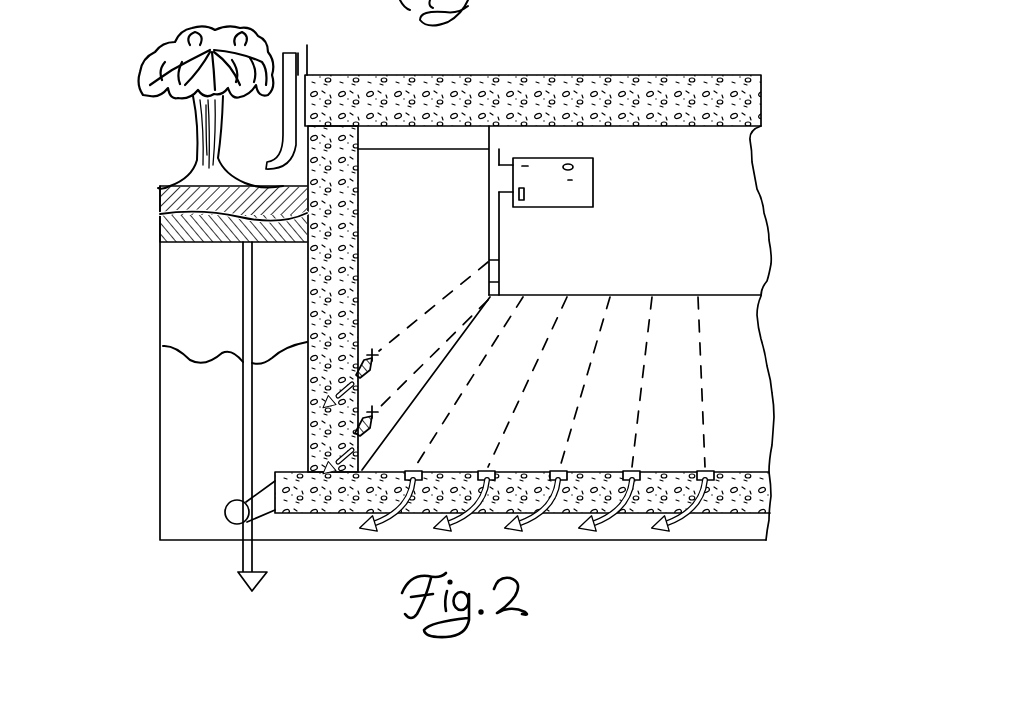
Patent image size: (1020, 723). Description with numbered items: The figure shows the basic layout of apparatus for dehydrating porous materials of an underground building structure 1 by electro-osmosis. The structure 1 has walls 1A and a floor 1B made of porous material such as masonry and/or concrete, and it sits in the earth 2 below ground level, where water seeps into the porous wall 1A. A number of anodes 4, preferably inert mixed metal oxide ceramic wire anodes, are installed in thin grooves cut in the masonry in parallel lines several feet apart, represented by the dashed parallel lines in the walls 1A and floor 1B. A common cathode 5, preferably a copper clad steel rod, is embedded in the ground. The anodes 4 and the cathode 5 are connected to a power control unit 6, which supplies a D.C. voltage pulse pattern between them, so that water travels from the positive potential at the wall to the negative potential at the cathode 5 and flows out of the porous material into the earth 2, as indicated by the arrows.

The building structure 1 is at (672, 69).
The wall 1A is at (360, 247).
The floor 1B is at (733, 477).
The earth 2 is at (160, 225).
The anodes 4 is at (347, 350).
The common cathode 5 is at (253, 556).
The power control unit 6 is at (553, 193).